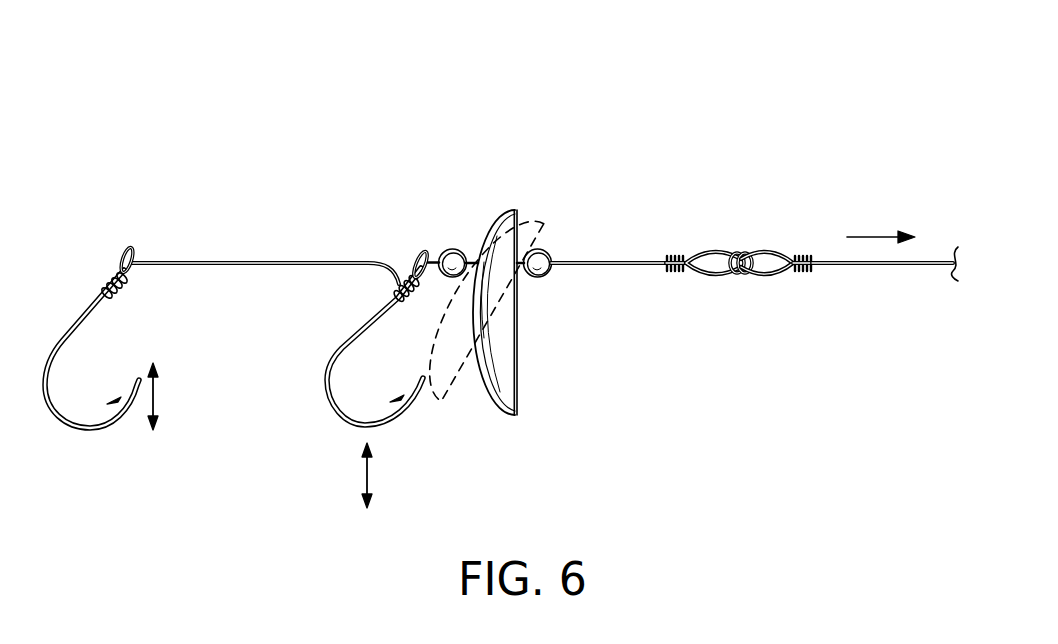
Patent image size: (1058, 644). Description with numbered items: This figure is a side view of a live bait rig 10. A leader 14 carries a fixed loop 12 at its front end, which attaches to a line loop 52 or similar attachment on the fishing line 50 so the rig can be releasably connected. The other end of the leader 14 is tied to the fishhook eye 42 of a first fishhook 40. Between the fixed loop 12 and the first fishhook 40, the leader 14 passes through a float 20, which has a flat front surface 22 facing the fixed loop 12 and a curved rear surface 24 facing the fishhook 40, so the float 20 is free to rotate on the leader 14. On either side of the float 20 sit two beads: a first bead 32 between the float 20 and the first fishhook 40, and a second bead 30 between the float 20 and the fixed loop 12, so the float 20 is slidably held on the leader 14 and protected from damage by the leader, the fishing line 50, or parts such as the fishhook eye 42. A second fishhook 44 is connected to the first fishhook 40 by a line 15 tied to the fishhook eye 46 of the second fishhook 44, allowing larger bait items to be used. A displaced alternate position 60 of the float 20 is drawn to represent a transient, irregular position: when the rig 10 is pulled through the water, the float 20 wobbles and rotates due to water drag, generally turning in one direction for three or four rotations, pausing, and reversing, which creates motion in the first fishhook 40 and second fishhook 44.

The live bait rig 10 is at (720, 88).
The fixed loop 12 is at (715, 277).
The leader 14 is at (633, 268).
The line 15 is at (287, 261).
The float 20 is at (510, 212).
The flat front surface 22 is at (523, 368).
The curved rear surface 24 is at (464, 320).
The second bead 30 is at (552, 257).
The first bead 32 is at (451, 248).
The first fishhook 40 is at (388, 423).
The fishhook eye 42 is at (427, 250).
The second fishhook 44 is at (86, 430).
The fishhook eye 46 is at (130, 246).
The fishing line 50 is at (883, 267).
The line loop 52 is at (770, 277).
The displaced alternate position of float 60 is at (535, 227).